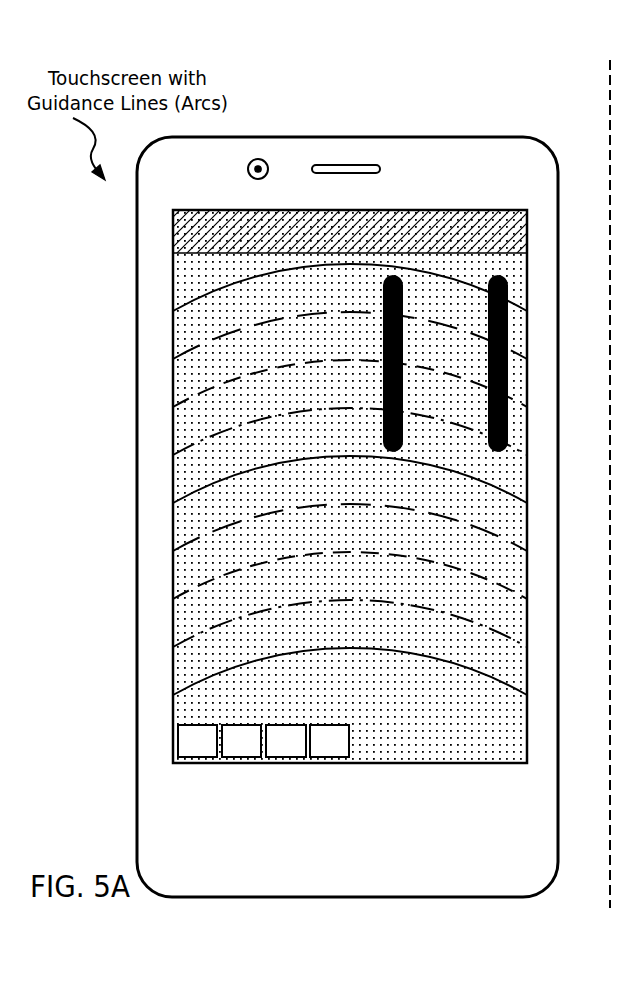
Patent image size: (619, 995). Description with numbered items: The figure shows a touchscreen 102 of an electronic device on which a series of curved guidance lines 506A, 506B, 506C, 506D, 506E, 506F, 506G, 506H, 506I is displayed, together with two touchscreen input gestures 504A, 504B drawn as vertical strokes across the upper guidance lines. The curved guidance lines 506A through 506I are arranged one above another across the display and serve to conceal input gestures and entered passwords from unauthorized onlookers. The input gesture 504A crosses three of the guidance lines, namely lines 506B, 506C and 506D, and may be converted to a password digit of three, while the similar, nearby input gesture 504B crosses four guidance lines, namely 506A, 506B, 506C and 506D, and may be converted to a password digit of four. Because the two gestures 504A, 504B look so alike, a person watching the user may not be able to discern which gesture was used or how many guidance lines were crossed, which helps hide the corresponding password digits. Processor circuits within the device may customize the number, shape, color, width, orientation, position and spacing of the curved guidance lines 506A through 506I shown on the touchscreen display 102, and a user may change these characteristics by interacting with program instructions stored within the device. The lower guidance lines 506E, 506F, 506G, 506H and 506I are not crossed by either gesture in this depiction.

The touchscreen 102 is at (172, 209).
The touchscreen input gesture 504A is at (403, 345).
The touchscreen input gesture 504B is at (488, 303).
The curved guidance line 506A is at (273, 273).
The curved guidance line 506B is at (273, 321).
The curved guidance line 506C is at (273, 369).
The curved guidance line 506D is at (273, 417).
The curved guidance line 506E is at (273, 465).
The curved guidance line 506F is at (273, 513).
The curved guidance line 506G is at (273, 561).
The curved guidance line 506H is at (273, 609).
The curved guidance line 506I is at (281, 657).